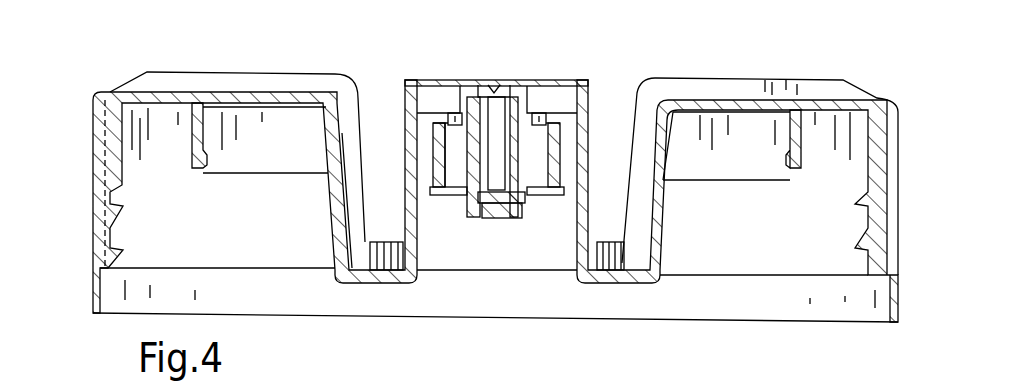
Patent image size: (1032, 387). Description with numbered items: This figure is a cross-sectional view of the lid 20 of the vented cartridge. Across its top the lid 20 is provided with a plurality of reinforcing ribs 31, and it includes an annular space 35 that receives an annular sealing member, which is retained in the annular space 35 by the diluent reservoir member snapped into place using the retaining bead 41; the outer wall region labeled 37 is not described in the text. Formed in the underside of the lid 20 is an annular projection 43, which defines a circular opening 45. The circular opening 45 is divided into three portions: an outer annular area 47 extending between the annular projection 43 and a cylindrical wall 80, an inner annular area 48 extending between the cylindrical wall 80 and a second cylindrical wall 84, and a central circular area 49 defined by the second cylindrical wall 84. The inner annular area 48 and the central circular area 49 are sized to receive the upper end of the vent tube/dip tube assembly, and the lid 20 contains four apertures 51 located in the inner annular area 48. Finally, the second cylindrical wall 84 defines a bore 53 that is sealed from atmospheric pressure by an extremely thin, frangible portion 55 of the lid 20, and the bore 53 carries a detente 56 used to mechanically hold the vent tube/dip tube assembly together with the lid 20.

The lid 20 is at (353, 361).
The reinforcing ribs 31 is at (258, 72).
The annular space 35 is at (170, 118).
The outer wall 37 is at (92, 122).
The retaining bead 41 is at (192, 155).
The annular projection 43 is at (615, 284).
The circular opening 45 is at (578, 284).
The outer annular area 47 is at (425, 152).
The inner annular area 48 is at (458, 168).
The central circular area 49 is at (497, 132).
The apertures 51 is at (455, 112).
The bore 53 is at (502, 110).
The frangible portion 55 is at (495, 82).
The detente 56 is at (502, 197).
The cylindrical wall 80 is at (437, 193).
The second cylindrical wall 84 is at (500, 195).